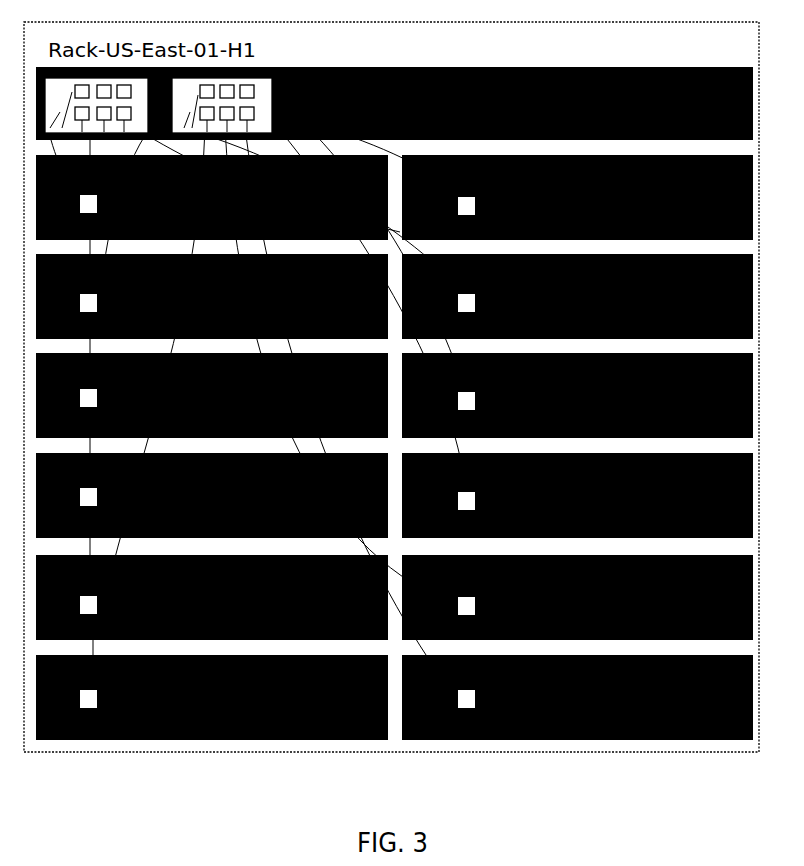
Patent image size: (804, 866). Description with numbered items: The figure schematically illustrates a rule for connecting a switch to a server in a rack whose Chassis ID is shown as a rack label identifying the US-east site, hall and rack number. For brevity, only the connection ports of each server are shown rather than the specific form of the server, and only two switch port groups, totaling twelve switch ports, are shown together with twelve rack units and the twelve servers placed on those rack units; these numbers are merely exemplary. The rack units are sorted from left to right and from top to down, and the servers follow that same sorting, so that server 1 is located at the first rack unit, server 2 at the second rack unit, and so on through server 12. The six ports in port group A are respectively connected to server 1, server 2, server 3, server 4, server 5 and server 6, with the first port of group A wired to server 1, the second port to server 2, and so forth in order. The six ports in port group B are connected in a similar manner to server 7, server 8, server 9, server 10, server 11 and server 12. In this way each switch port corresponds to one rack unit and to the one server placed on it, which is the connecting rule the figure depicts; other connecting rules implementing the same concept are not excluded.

The server 1 is at (212, 197).
The server 2 is at (577, 197).
The server 3 is at (212, 296).
The server 4 is at (577, 296).
The server 5 is at (212, 395).
The server 6 is at (577, 395).
The server 7 is at (212, 495).
The server 8 is at (577, 495).
The server 9 is at (212, 597).
The server 10 is at (577, 597).
The server 11 is at (212, 697).
The server 12 is at (577, 697).